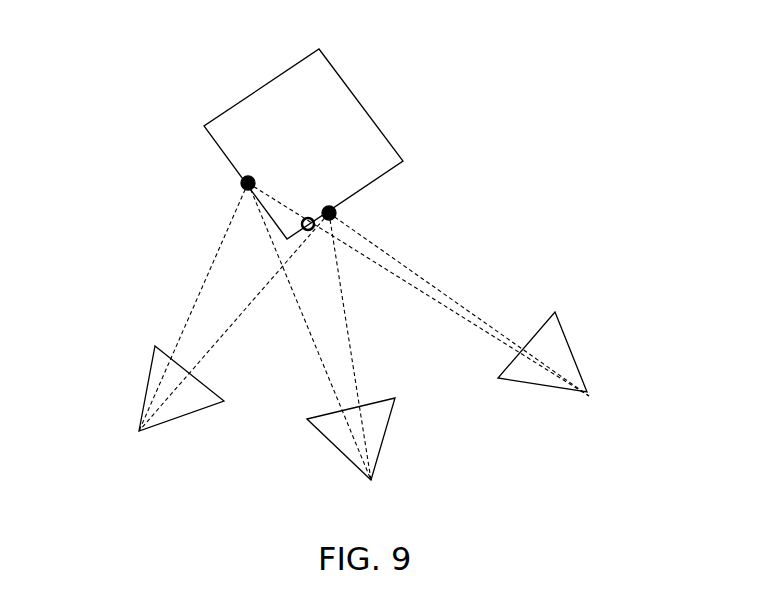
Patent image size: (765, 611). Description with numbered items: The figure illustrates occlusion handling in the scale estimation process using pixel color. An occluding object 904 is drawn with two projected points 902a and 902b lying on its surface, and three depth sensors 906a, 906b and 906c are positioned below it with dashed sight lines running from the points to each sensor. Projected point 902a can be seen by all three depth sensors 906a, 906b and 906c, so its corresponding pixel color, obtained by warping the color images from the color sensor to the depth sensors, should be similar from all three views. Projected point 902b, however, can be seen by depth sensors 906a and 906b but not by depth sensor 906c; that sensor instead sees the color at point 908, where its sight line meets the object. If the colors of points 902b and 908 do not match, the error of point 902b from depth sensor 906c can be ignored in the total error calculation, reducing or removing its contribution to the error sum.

The object / surface 904 is at (217, 146).
The projected point 902a is at (336, 213).
The projected point 902b is at (241, 183).
The point 908 is at (301, 226).
The depth sensor 906a is at (148, 382).
The depth sensor 906b is at (333, 449).
The depth sensor 906c is at (569, 340).